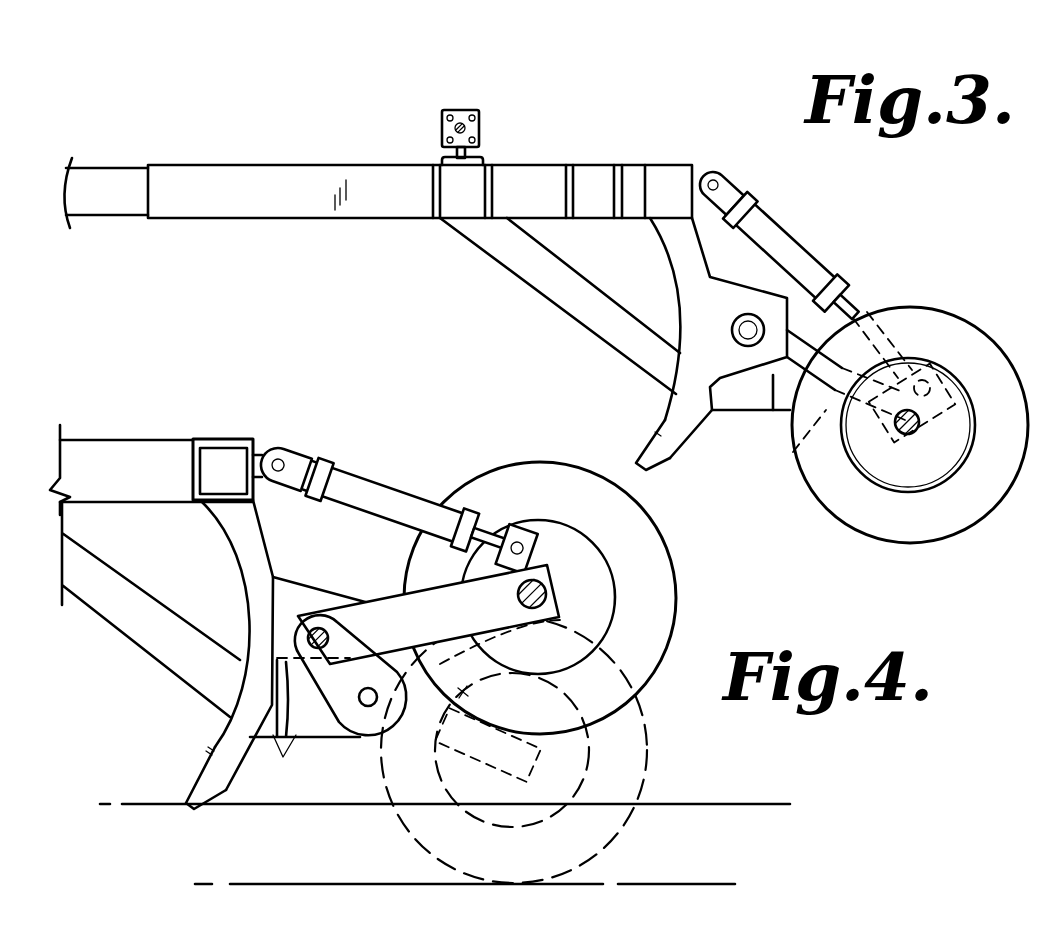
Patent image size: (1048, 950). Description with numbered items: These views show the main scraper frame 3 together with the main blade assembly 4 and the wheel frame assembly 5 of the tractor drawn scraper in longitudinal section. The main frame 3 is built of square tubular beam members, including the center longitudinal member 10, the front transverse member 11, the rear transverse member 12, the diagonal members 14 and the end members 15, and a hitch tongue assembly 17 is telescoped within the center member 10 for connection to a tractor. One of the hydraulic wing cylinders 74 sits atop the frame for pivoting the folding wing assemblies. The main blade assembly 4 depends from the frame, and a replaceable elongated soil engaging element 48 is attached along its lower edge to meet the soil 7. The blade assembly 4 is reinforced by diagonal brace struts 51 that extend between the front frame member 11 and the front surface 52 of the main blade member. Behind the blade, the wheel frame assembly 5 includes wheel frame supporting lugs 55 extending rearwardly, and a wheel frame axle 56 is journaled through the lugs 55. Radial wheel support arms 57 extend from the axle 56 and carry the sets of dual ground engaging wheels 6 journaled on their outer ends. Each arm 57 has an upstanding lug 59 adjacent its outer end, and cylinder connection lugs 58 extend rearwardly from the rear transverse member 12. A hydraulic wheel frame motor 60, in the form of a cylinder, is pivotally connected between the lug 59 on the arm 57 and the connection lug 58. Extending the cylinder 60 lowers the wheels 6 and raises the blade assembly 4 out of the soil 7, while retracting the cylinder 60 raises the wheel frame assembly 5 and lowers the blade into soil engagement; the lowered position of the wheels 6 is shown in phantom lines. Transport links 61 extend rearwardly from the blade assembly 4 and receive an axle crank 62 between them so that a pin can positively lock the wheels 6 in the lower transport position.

In FIG. 3, the scraper main frame 3 is at (224, 158).
In FIG. 4, the scraper main frame 3 is at (130, 432).
In FIG. 3, the main blade assembly 4 is at (650, 238).
In FIG. 4, the main blade assembly 4 is at (200, 521).
In FIG. 3, the wheel frame assembly 5 is at (792, 450).
In FIG. 3, the ground engaging wheels 6 is at (918, 305).
In FIG. 4, the ground engaging wheels 6 is at (458, 494).
In FIG. 4, the soil 7 is at (700, 803).
In FIG. 4, the center longitudinal member 10 is at (90, 442).
In FIG. 3, the front transverse member 11 is at (462, 196).
In FIG. 4, the rear transverse member 12 is at (186, 440).
In FIG. 3, the diagonal members 14 is at (196, 206).
In FIG. 3, the end members 15 is at (513, 172).
In FIG. 3, the hitch tongue assembly 17 is at (114, 200).
In FIG. 3, the soil engaging element 48 is at (642, 456).
In FIG. 4, the soil engaging element 48 is at (184, 796).
In FIG. 3, the diagonal brace struts 51 is at (555, 313).
In FIG. 4, the diagonal brace struts 51 is at (110, 604).
In FIG. 3, the front surface of the main blade member 52 is at (675, 262).
In FIG. 4, the front surface of the main blade member 52 is at (224, 550).
In FIG. 3, the wheel frame supporting lugs 55 is at (722, 406).
In FIG. 4, the wheel frame supporting lugs 55 is at (284, 578).
In FIG. 3, the wheel frame axle 56 is at (748, 314).
In FIG. 4, the wheel frame axle 56 is at (300, 623).
In FIG. 3, the wheel support arms 57 is at (792, 398).
In FIG. 4, the wheel support arms 57 is at (548, 576).
In FIG. 3, the cylinder connection lugs 58 is at (706, 176).
In FIG. 4, the cylinder connection lugs 58 is at (270, 452).
In FIG. 3, the upstanding lug 59 is at (962, 380).
In FIG. 4, the upstanding lug 59 is at (538, 528).
In FIG. 3, the wheel frame motors 60 is at (802, 264).
In FIG. 4, the wheel frame motors 60 is at (352, 486).
In FIG. 3, the transport links 61 is at (745, 412).
In FIG. 4, the transport links 61 is at (280, 740).
In FIG. 4, the axle crank 62 is at (346, 722).
In FIG. 3, the hydraulic wing cylinders 74 is at (441, 122).